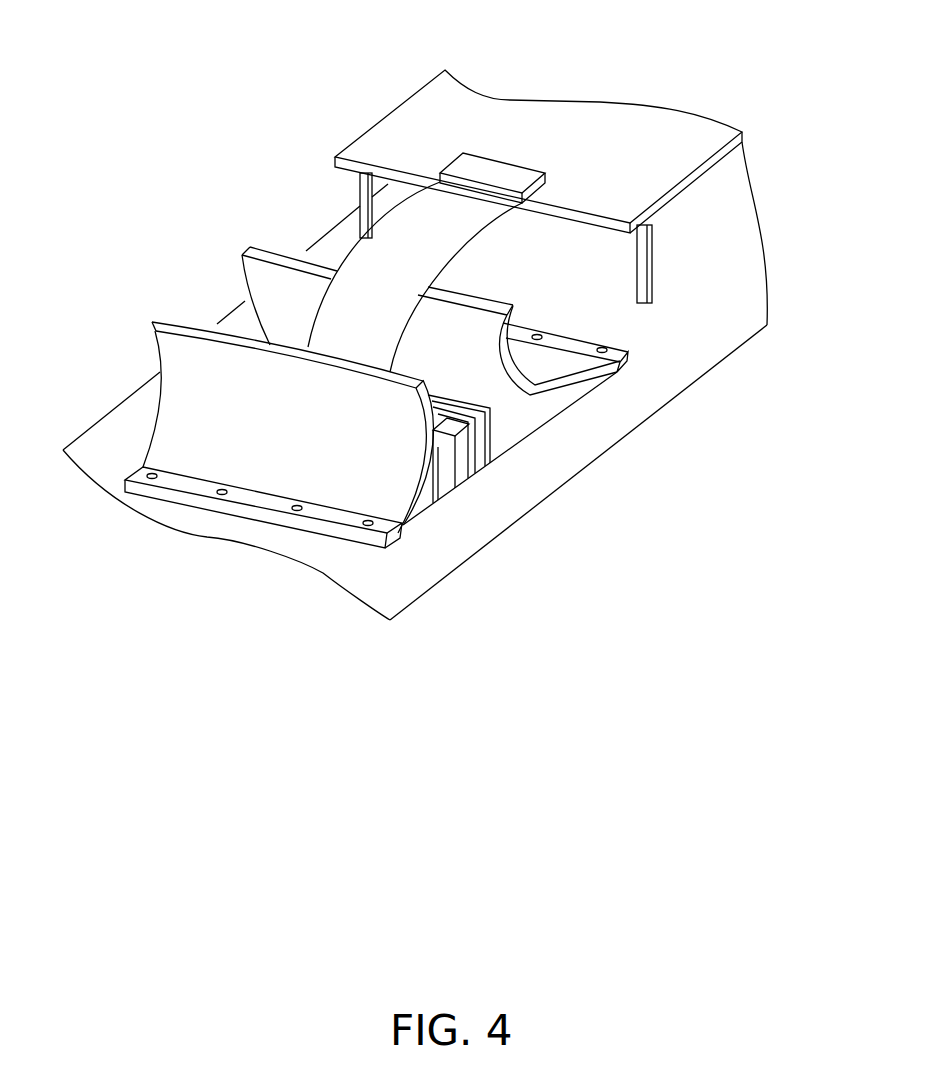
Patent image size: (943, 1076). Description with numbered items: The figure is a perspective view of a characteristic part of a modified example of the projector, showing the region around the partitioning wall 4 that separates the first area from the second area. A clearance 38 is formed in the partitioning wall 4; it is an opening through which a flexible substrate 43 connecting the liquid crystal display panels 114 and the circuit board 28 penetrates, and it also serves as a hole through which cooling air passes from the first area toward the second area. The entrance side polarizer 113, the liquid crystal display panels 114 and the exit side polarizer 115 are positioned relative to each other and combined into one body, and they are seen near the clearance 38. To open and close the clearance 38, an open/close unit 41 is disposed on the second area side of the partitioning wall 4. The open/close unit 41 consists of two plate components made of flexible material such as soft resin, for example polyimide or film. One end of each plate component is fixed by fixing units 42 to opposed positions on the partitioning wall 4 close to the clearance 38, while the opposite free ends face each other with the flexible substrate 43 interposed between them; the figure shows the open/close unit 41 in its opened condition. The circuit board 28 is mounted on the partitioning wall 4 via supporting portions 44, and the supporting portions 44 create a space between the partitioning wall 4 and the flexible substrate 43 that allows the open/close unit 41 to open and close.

The partitioning wall 4 is at (697, 360).
The circuit board 28 is at (425, 97).
The clearance 38 is at (575, 496).
The open/close unit 41 is at (252, 285).
The fixing unit 42 is at (632, 362).
The flexible substrate 43 is at (360, 260).
The supporting portion 44 is at (358, 190).
The entrance side polarizer 113 is at (448, 500).
The liquid crystal display panel 114 is at (460, 472).
The exit side polarizer 115 is at (490, 455).